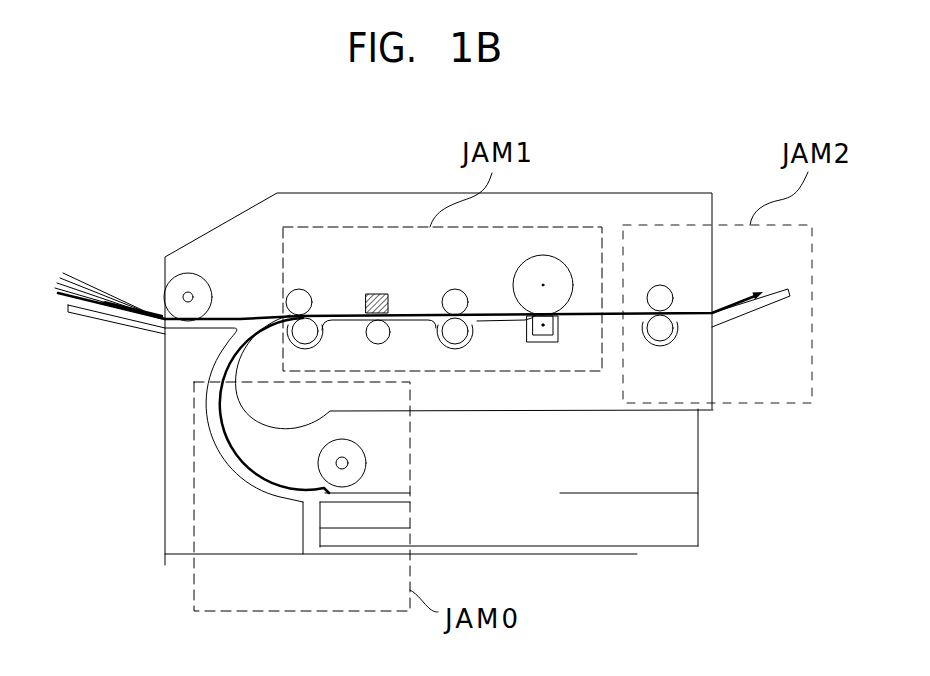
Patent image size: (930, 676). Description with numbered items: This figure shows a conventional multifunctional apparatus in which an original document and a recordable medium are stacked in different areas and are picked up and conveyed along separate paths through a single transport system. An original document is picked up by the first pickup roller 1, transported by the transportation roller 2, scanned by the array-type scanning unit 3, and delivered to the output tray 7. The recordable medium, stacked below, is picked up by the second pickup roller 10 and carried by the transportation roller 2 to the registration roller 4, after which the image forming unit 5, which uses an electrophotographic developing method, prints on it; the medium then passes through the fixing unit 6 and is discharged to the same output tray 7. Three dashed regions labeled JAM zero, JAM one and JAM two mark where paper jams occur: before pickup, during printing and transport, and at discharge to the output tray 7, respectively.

The first pickup roller 1 is at (187, 272).
The transportation roller 2 is at (316, 331).
The scanning unit 3 is at (378, 294).
The registration roller 4 is at (460, 333).
The image forming unit 5 is at (545, 342).
The fixing unit 6 is at (662, 340).
The output tray 7 is at (757, 306).
The second pickup roller 10 is at (327, 478).